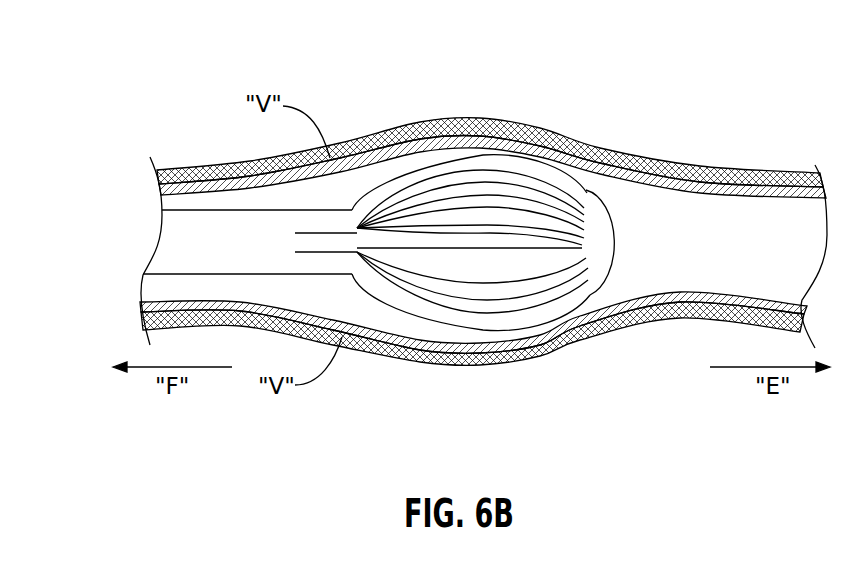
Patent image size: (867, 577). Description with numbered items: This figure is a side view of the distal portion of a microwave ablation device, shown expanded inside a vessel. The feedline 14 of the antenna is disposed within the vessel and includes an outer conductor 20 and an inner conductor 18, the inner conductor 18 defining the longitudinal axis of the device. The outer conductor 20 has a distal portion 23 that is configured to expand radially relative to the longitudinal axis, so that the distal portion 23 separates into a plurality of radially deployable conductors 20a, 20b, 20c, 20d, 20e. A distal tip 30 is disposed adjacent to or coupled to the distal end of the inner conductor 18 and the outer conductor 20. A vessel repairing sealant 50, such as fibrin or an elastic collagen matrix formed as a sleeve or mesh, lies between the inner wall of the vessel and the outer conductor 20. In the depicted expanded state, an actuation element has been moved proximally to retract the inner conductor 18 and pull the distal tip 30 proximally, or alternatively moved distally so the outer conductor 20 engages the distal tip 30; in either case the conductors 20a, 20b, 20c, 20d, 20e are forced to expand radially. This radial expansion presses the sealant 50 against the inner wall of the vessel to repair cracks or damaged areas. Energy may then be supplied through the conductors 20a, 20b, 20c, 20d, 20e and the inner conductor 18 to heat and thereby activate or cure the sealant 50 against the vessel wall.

The feedline 14 is at (183, 197).
The inner conductor 18 is at (472, 246).
The outer conductor 20 is at (270, 229).
The conductor 20a is at (547, 283).
The conductor 20b is at (528, 322).
The conductor 20c is at (545, 222).
The conductor 20d is at (522, 190).
The conductor 20e is at (497, 163).
The distal portion 23 is at (294, 276).
The distal tip 30 is at (622, 240).
The vessel repairing sealant 50 is at (450, 142).